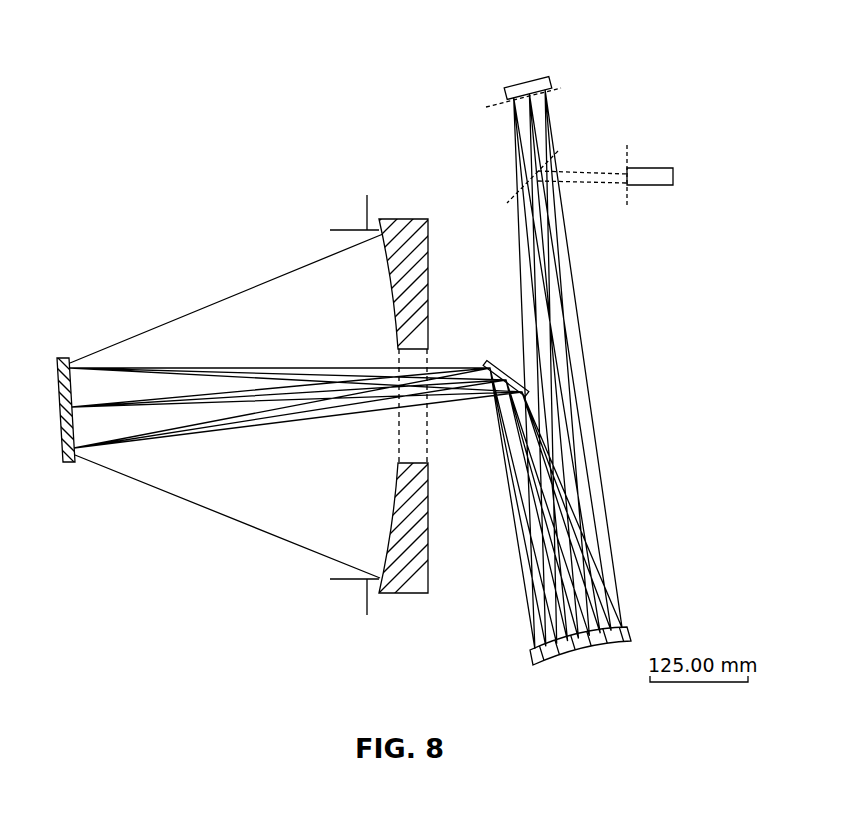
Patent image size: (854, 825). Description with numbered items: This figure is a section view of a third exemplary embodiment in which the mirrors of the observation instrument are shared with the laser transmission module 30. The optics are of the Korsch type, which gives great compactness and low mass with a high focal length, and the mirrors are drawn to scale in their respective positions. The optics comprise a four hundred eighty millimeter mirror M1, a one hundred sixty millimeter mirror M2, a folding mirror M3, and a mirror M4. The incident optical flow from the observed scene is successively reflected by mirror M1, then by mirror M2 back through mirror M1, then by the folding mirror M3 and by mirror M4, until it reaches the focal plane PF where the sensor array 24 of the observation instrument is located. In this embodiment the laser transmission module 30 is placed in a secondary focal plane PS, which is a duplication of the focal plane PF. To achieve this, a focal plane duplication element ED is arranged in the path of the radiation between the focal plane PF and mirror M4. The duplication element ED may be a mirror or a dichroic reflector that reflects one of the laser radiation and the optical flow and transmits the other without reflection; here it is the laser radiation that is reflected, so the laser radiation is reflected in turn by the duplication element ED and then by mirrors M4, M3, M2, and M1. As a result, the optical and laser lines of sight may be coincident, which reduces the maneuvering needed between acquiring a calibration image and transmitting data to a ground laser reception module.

The mirror M1 is at (408, 218).
The mirror M2 is at (68, 466).
The folding mirror M3 is at (491, 360).
The mirror M4 is at (553, 661).
The sensor array 24 is at (525, 74).
The focal plane PF is at (503, 99).
The focal plane duplication element ED is at (558, 151).
The laser transmission module 30 is at (650, 166).
The secondary focal plane PS is at (627, 208).